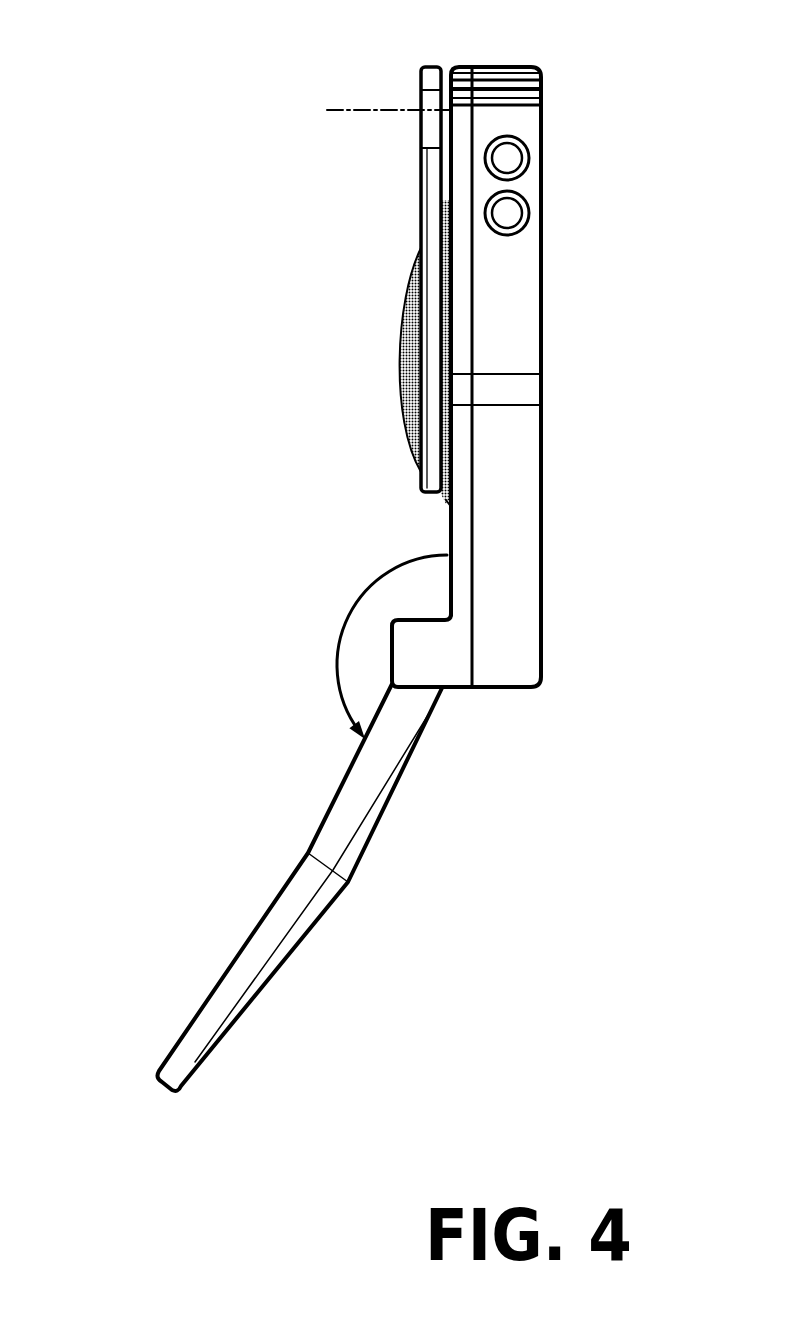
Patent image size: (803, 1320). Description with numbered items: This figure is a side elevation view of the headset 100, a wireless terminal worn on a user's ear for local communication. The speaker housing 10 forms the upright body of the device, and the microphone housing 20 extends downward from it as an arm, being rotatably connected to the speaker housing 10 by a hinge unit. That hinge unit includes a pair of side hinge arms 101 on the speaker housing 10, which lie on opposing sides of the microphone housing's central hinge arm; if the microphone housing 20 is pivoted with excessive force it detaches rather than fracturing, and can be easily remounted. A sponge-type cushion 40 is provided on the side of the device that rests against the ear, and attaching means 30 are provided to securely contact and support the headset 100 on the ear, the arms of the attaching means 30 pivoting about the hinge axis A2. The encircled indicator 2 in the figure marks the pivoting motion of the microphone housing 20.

The headset 100 is at (232, 428).
The speaker housing 10 is at (553, 407).
The microphone housing 20 is at (388, 830).
The attaching means 30 is at (428, 414).
The sponge-type cushion 40 is at (400, 338).
The side hinge arms 101 is at (403, 650).
The rotation direction indicator 2 is at (388, 572).
The hinge axis A2 is at (340, 110).